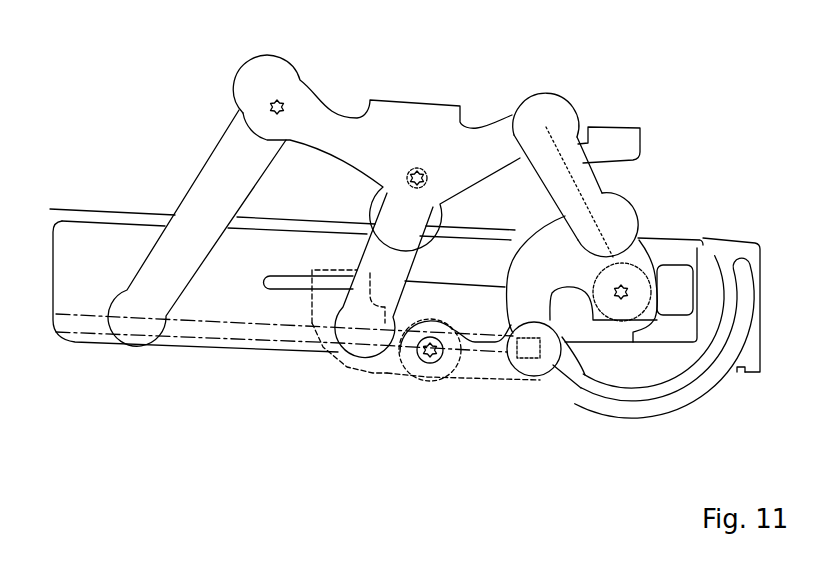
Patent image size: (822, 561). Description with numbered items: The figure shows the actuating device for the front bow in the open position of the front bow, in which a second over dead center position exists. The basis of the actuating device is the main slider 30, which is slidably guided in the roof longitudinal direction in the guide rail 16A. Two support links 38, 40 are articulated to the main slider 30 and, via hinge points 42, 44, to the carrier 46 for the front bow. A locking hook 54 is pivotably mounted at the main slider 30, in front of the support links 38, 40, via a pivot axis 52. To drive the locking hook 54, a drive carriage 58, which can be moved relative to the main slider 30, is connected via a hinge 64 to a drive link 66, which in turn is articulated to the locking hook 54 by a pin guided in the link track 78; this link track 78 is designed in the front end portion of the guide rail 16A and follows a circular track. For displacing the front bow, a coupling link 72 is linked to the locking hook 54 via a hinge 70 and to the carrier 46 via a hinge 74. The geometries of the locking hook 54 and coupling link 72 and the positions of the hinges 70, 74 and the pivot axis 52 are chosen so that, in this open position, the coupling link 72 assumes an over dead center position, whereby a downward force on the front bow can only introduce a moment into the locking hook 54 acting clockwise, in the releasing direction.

The guide rail 16A is at (88, 209).
The main slider 30 is at (125, 238).
The support link 38 is at (218, 175).
The support link 40 is at (393, 228).
The hinge point 42 is at (274, 100).
The hinge point 44 is at (417, 168).
The carrier 46 is at (336, 131).
The pivot axis 52 is at (621, 300).
The locking hook 54 is at (577, 387).
The drive carriage 58 is at (357, 377).
The hinge 64 is at (430, 357).
The drive link 66 is at (480, 368).
The hinge 70 is at (612, 230).
The coupling link 72 is at (595, 178).
The hinge 74 is at (546, 127).
The link track 78 is at (695, 382).